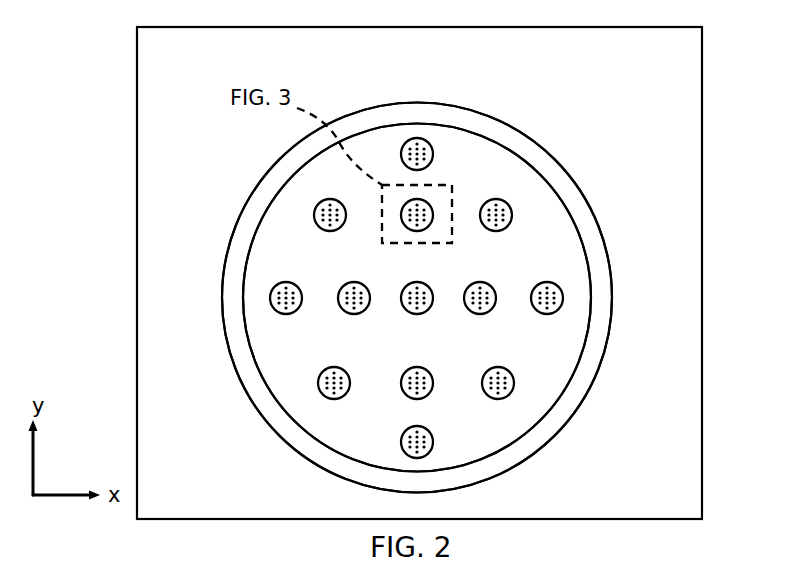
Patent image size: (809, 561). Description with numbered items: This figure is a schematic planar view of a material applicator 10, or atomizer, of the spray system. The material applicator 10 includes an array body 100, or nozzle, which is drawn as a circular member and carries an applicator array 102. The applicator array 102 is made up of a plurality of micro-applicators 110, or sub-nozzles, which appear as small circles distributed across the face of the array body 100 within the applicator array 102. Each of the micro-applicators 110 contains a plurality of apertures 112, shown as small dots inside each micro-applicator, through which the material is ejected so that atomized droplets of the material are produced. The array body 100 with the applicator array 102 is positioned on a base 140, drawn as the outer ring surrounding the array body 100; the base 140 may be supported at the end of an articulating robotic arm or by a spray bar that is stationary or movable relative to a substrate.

The material applicator 10 is at (665, 153).
The array body 100 is at (496, 132).
The applicator array 102 is at (270, 236).
The micro-applicators 110 is at (302, 283).
The apertures 112 is at (333, 375).
The base 140 is at (614, 240).